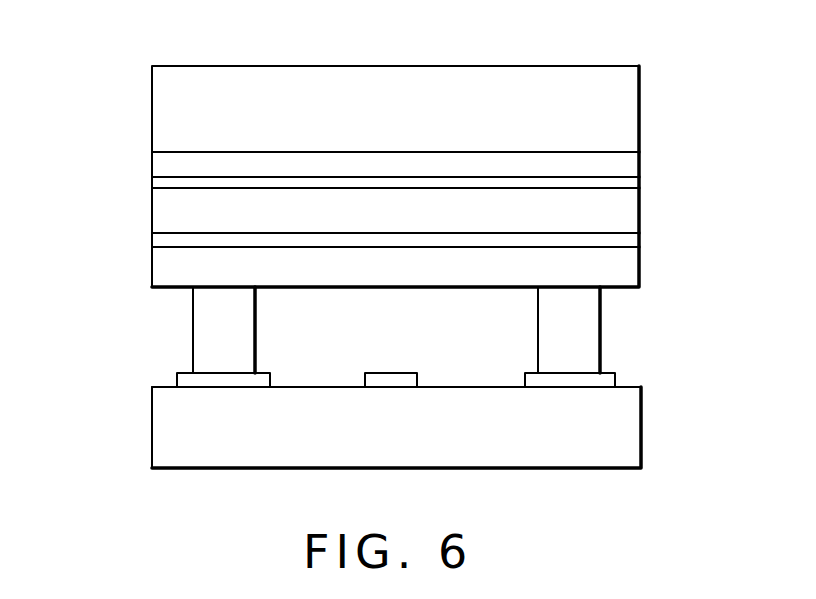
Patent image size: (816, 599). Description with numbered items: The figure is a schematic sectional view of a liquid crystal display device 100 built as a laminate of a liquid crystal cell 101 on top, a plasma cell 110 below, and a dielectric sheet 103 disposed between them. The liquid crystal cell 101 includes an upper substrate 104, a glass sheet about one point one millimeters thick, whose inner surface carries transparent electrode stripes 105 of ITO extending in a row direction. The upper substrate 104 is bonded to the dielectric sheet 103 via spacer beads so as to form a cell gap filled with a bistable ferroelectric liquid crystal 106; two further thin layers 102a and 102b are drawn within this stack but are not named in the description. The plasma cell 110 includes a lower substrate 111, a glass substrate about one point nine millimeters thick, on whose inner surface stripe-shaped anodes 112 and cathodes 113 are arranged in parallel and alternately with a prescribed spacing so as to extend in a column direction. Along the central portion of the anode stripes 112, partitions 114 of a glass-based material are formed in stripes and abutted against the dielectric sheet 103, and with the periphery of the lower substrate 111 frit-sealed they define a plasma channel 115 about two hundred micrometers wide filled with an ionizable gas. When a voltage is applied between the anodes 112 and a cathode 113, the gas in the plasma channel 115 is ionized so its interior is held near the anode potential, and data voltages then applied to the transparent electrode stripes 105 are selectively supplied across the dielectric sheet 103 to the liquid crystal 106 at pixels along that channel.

The liquid crystal display device 100 is at (405, 66).
The liquid crystal cell 101 is at (142, 177).
The upper substrate 104 is at (623, 114).
The transparent electrode stripes 105 is at (627, 170).
The first electrode layer 102a is at (630, 186).
The bistable ferroelectric liquid crystal 106 is at (623, 216).
The second electrode layer 102b is at (630, 245).
The dielectric sheet 103 is at (627, 274).
The plasma cell 110 is at (160, 357).
The lower substrate 111 is at (622, 434).
The anode stripes 112 is at (258, 379).
The cathodes 113 is at (393, 377).
The partitions 114 is at (587, 324).
The plasma channel 115 is at (277, 315).